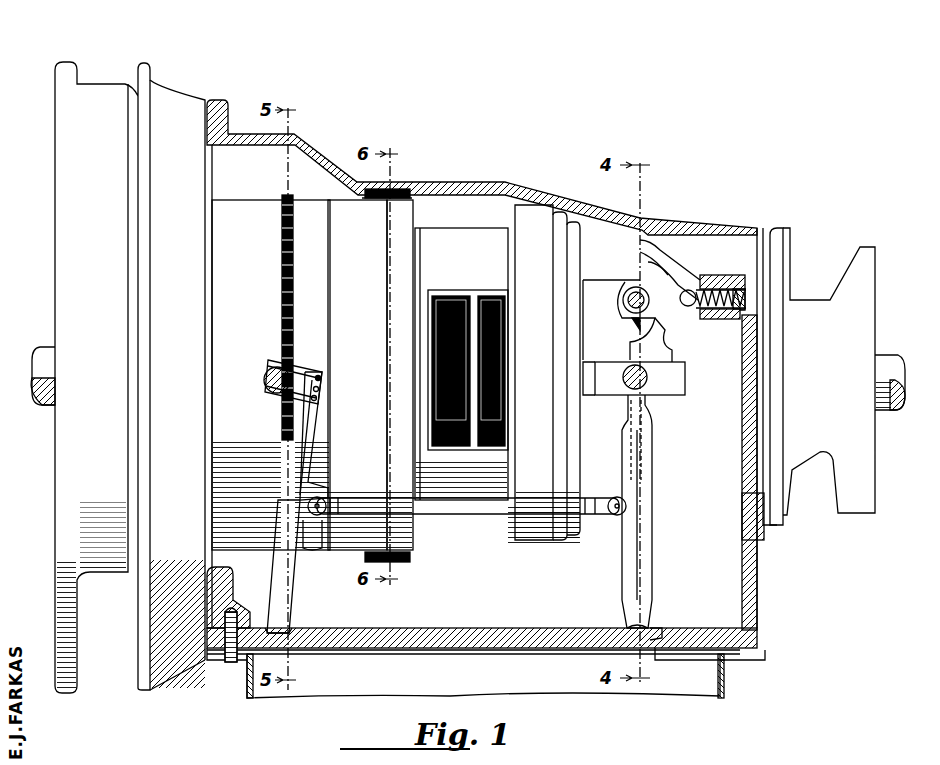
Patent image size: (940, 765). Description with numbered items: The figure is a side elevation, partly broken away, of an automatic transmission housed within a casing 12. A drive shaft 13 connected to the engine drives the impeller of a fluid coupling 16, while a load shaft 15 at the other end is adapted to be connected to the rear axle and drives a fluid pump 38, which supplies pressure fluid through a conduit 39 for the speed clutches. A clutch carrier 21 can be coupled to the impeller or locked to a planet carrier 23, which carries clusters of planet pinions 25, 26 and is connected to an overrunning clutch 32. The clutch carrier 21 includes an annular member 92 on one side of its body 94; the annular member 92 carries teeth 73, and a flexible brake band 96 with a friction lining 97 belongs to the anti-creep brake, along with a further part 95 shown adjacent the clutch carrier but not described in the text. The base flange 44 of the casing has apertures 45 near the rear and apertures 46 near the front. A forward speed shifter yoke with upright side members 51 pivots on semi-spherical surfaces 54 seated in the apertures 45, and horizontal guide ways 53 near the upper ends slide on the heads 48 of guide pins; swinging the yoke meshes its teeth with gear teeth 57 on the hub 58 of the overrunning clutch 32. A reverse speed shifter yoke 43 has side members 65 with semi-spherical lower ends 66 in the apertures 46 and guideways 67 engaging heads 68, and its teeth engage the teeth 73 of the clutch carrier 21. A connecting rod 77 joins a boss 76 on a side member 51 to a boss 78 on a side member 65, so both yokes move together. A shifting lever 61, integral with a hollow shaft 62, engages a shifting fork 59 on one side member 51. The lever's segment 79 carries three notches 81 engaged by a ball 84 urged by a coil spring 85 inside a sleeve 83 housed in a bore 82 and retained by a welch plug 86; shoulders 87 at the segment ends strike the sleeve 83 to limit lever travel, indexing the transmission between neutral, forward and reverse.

The casing 12 is at (480, 183).
The drive shaft 13 is at (36, 347).
The load shaft 15 is at (900, 368).
The fluid coupling 16 is at (119, 74).
The clutch carrier 21 is at (258, 200).
The planet carrier 23 is at (464, 232).
The planet pinions 25 is at (452, 440).
The planet pinions 26 is at (480, 300).
The overrunning clutch 32 is at (592, 343).
The fluid pump 38 is at (850, 305).
The conduit 39 is at (657, 504).
The reverse speed shifter yoke 43 is at (305, 440).
The base flange 44 is at (458, 648).
The apertures 45 is at (657, 648).
The apertures 46 is at (292, 640).
The heads 48 is at (623, 377).
The side members 51 is at (645, 530).
The guide ways 53 is at (680, 388).
The semi-spherical surfaces 54 is at (655, 631).
The gear teeth 57 is at (645, 430).
The hub 58 is at (641, 448).
The shifting fork 59 is at (672, 350).
The shifting lever 61 is at (655, 318).
The hollow shaft 62 is at (622, 299).
The side members 65 is at (300, 472).
The semi-spherical shaped lower ends 66 is at (292, 630).
The guideways 67 is at (305, 384).
The heads 68 is at (265, 376).
The teeth 73 is at (292, 312).
The boss 76 is at (614, 514).
The connecting rod 77 is at (450, 516).
The boss 78 is at (310, 548).
The segment 79 is at (655, 270).
The notches 81 is at (692, 292).
The bore 82 is at (715, 290).
The sleeve 83 is at (748, 280).
The ball 84 is at (700, 312).
The coil spring 85 is at (746, 299).
The welch plug 86 is at (748, 305).
The shoulders 87 is at (668, 258).
The annular member 92 is at (212, 250).
The body 94 is at (318, 200).
The plate 95 is at (398, 285).
The brake band 96 is at (388, 190).
The friction lining 97 is at (405, 192).